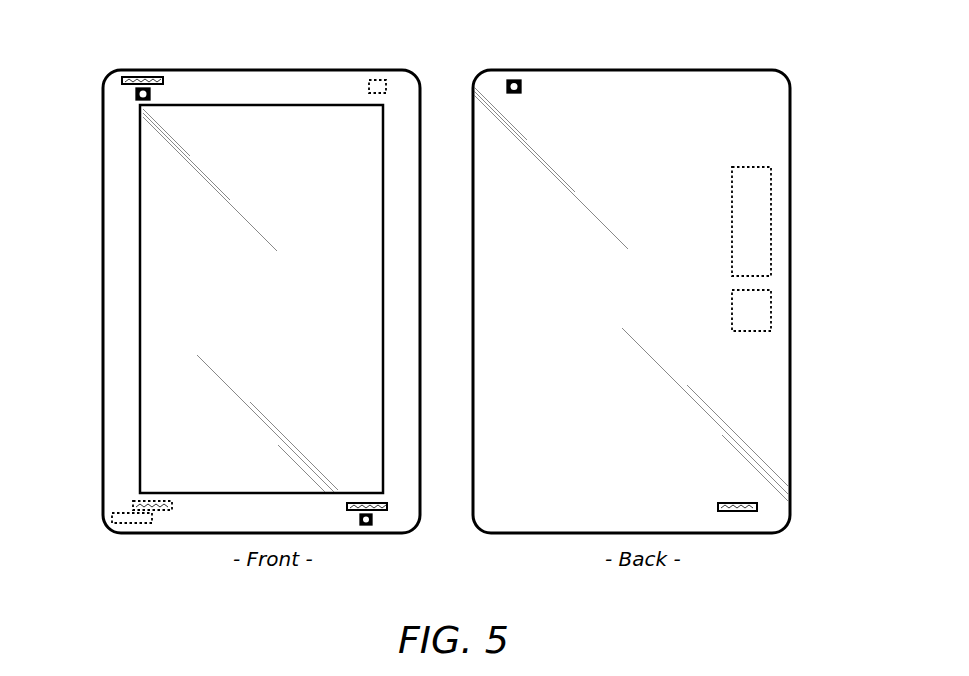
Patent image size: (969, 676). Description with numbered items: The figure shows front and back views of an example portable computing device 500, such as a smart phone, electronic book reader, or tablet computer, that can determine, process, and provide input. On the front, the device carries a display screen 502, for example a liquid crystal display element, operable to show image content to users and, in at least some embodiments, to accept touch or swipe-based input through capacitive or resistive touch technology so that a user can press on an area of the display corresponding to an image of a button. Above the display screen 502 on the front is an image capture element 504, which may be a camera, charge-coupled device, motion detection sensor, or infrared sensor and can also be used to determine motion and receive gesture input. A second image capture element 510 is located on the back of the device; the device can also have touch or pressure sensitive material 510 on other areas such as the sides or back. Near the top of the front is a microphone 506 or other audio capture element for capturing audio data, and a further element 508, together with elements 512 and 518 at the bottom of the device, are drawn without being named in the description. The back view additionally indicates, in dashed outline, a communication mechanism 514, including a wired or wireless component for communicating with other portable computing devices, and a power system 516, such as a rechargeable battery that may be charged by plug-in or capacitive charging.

The portable computing device 500 is at (819, 76).
The display screen 502 is at (140, 216).
The image capture element 504 is at (136, 94).
The microphone 506 is at (162, 78).
The speaker 508 is at (380, 511).
The image capture element 510 is at (378, 81).
The port 512 is at (150, 510).
The communication mechanism 514 is at (771, 238).
The power system 516 is at (771, 312).
The port 518 is at (123, 524).